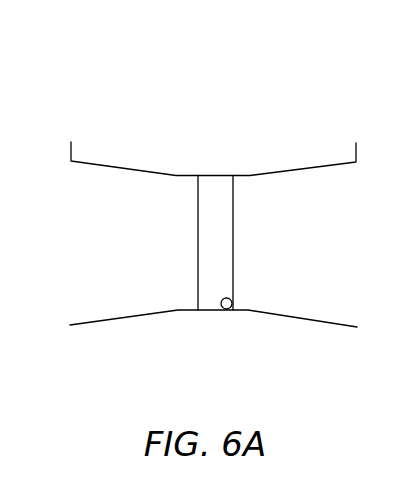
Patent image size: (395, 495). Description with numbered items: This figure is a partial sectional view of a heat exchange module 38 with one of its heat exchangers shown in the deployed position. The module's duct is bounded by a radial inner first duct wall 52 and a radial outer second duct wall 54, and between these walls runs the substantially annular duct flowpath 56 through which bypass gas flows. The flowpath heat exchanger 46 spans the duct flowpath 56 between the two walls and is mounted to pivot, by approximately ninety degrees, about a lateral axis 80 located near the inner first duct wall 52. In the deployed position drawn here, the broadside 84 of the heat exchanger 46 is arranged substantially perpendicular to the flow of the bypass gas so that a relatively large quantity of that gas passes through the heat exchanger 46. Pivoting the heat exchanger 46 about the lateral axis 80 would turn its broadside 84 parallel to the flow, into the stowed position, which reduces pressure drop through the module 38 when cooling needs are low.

The heat exchange module 38 is at (328, 100).
The radial outer second duct wall 54 is at (102, 161).
The flowpath heat exchanger 46 is at (232, 243).
The broadside 84 is at (198, 260).
The lateral axis 80 is at (226, 310).
The radial inner first duct wall 52 is at (98, 323).
The duct flowpath 56 is at (98, 245).